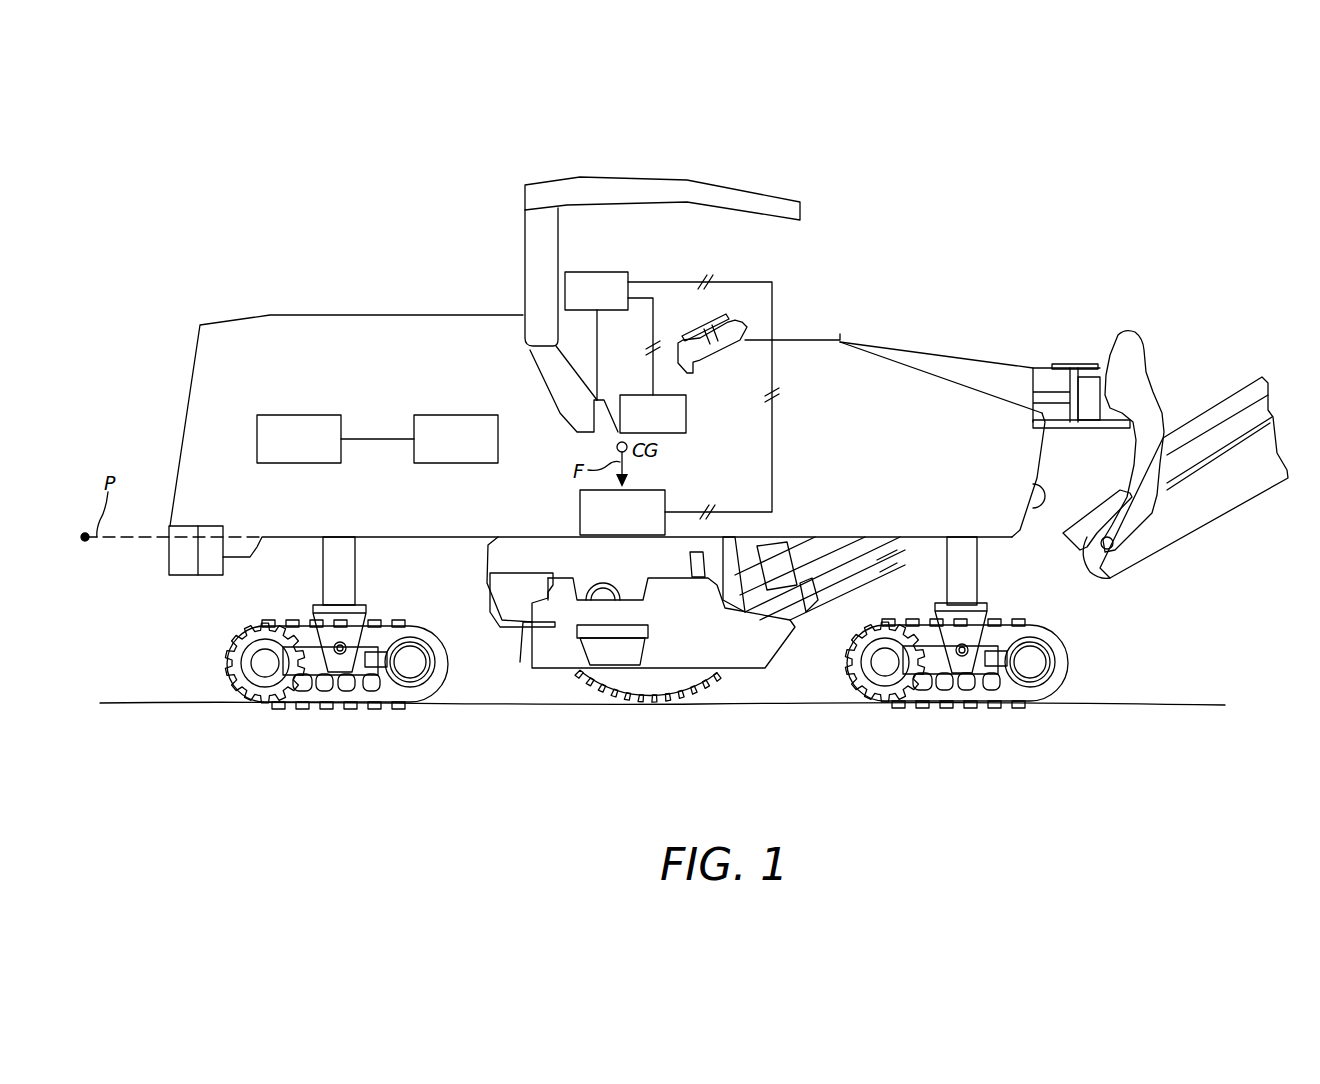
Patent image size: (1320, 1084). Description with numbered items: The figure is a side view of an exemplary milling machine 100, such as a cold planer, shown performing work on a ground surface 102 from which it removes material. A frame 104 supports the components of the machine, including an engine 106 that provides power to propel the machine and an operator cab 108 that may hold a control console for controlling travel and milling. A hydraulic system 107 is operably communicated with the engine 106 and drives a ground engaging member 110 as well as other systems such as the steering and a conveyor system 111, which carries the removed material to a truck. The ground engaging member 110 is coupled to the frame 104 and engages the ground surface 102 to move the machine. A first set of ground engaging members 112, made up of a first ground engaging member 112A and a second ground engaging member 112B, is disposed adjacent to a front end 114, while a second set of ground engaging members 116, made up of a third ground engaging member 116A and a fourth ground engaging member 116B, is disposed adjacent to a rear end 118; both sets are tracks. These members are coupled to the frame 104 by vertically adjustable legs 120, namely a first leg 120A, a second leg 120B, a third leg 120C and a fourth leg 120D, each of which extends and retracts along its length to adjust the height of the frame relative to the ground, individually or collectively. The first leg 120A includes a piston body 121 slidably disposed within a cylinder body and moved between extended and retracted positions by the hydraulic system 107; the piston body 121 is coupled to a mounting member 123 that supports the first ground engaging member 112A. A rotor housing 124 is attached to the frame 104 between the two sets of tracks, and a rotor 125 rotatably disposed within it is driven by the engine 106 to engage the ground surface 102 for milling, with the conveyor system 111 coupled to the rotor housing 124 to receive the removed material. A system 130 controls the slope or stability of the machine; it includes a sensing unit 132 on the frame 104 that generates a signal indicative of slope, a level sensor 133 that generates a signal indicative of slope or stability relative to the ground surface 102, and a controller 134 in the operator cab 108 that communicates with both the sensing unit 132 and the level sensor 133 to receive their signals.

The milling machine 100 is at (1134, 213).
The ground surface 102 is at (1210, 703).
The frame 104 is at (843, 334).
The engine 106 is at (335, 439).
The hydraulic system 107 is at (456, 439).
The operator cab 108 is at (629, 178).
The ground engaging member 110 is at (220, 725).
The conveyor system 111 is at (1233, 502).
The first set of ground engaging members 112 is at (994, 703).
The first ground engaging member 112A is at (1058, 678).
The second ground engaging member 112B is at (1060, 660).
The front end 114 is at (1156, 601).
The second set of ground engaging members 116 is at (380, 717).
The third ground engaging member 116A is at (447, 688).
The fourth ground engaging member 116B is at (445, 650).
The rear end 118 is at (167, 600).
The vertically adjustable legs 120 is at (312, 580).
The first leg 120A is at (980, 583).
The second leg 120B is at (980, 578).
The third leg 120C is at (357, 579).
The fourth leg 120D is at (357, 577).
The piston body 121 is at (322, 555).
The mounting member 123 is at (367, 612).
The rotor housing 124 is at (785, 650).
The rotor 125 is at (670, 695).
The system 130 is at (658, 265).
The sensing unit 132 is at (653, 414).
The level sensor 133 is at (622, 512).
The controller 134 is at (596, 291).